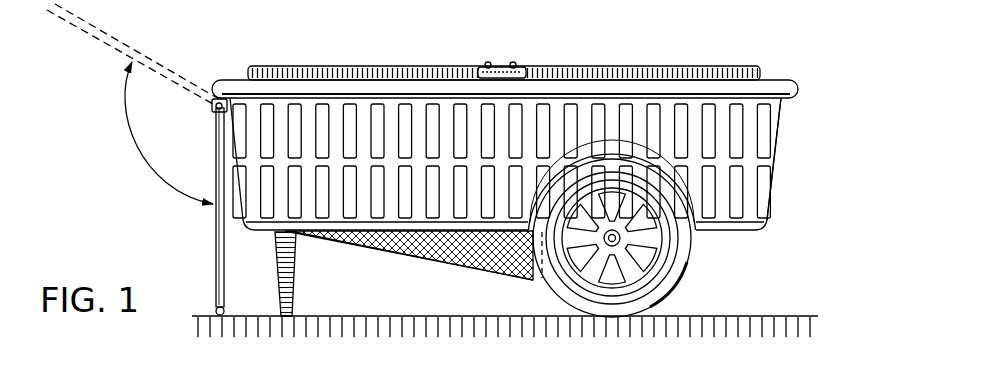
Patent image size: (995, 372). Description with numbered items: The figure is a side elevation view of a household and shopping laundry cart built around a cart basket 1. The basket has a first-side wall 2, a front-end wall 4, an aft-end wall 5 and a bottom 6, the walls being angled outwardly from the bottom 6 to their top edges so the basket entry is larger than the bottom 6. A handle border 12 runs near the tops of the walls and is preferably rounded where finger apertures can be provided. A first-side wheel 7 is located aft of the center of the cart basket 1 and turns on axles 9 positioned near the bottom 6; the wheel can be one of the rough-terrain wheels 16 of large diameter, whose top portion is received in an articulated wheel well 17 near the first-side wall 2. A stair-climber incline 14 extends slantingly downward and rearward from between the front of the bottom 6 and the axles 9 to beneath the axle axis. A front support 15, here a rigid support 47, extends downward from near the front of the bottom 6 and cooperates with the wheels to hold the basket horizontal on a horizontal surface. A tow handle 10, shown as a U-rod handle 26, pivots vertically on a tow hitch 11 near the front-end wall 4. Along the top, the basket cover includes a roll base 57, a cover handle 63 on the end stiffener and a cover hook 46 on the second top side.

The cart basket 1 is at (835, 162).
The first-side wall 2 is at (363, 160).
The front-end wall 4 is at (238, 148).
The aft-end wall 5 is at (772, 150).
The bottom 6 is at (385, 245).
The first-side wheel 7 is at (712, 277).
The axles 9 is at (612, 245).
The tow handle 10 is at (90, 57).
The tow hitch 11 is at (214, 110).
The handle border 12 is at (570, 92).
The stair-climber incline 14 is at (421, 262).
The front support 15 is at (298, 287).
The rough-terrain wheels 16 is at (648, 300).
The wheel wells 17 is at (606, 158).
The U-rod handle 26 is at (219, 316).
The cover hook 46 is at (513, 66).
The rigid support 47 is at (280, 272).
The roll base 57 is at (418, 68).
The cover handle 63 is at (482, 68).